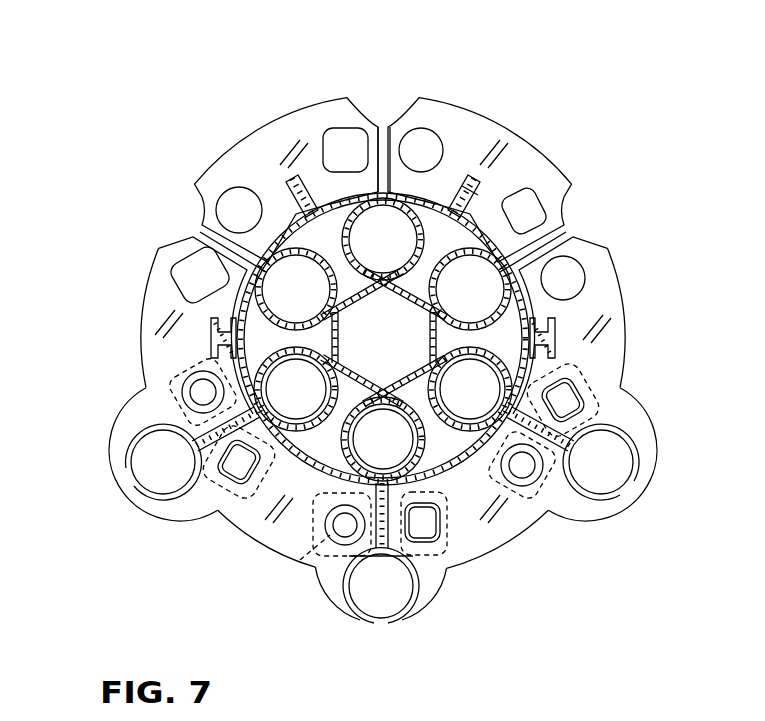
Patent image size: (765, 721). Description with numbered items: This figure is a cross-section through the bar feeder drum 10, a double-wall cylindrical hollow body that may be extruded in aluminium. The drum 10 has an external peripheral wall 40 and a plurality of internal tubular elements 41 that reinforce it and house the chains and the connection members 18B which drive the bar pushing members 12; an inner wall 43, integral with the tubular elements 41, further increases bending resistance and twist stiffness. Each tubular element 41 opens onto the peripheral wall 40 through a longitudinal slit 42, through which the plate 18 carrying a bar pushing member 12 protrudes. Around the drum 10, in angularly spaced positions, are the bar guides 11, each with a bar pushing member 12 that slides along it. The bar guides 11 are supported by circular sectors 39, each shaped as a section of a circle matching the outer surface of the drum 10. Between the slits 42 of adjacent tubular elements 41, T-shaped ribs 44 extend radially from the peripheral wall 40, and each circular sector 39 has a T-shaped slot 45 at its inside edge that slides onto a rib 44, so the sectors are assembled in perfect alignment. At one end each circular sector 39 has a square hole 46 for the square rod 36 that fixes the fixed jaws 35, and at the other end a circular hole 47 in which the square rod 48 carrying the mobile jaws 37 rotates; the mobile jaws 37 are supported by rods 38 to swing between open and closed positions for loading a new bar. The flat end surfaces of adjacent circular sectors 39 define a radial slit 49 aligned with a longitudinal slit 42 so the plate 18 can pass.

The drum 10 is at (548, 312).
The bar guide 11 is at (652, 428).
The bar pushing member 12 is at (155, 462).
The plate 18 is at (207, 475).
The connection member 18B is at (287, 400).
The fixed jaws 35 is at (430, 597).
The square rod 36 is at (435, 530).
The mobile jaws 37 is at (330, 597).
The rod 38 is at (337, 538).
The circular sector 39 is at (243, 162).
The external peripheral wall 40 is at (437, 185).
The tubular element 41 is at (473, 320).
The longitudinal slit 42 is at (265, 265).
The inner wall 43 is at (331, 337).
The T-shaped rib 44 is at (305, 188).
The T-shaped slot 45 is at (470, 188).
The square hole 46 is at (343, 148).
The circular hole 47 is at (222, 207).
The square rod 48 is at (313, 522).
The radial slit 49 is at (380, 125).